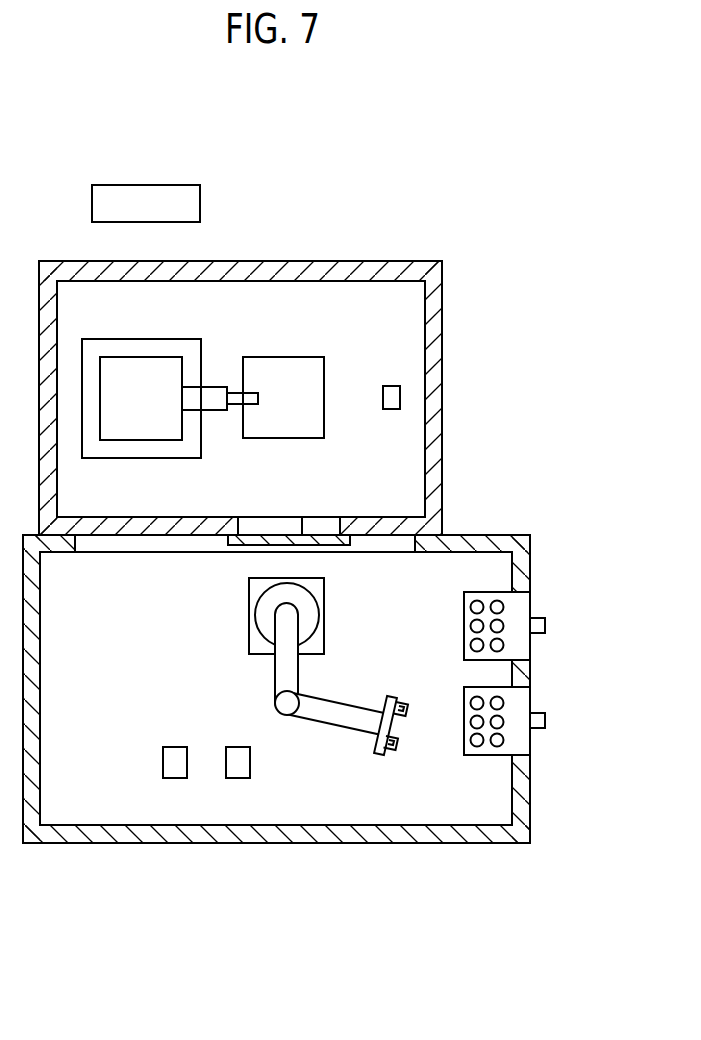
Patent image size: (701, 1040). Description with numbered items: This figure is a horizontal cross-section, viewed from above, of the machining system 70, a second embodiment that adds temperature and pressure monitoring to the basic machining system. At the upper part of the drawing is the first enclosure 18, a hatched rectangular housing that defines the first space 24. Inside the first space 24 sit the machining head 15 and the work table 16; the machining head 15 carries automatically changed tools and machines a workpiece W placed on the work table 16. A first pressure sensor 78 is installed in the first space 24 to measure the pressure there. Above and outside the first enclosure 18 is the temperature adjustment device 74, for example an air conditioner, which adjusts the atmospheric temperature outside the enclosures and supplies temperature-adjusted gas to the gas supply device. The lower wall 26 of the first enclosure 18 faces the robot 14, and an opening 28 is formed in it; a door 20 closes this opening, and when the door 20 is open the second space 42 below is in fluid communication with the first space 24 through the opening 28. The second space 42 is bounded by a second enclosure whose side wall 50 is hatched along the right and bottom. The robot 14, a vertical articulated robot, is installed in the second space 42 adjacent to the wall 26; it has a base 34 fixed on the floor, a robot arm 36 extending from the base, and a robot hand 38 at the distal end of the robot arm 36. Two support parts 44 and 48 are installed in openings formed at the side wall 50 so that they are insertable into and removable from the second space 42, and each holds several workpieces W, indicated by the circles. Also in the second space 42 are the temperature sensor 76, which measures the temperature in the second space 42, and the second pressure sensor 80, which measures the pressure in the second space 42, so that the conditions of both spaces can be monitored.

The machining system 70 is at (552, 125).
The temperature adjustment device 74 is at (140, 212).
The first enclosure 18 is at (432, 302).
The first space 24 is at (108, 318).
The machining head 15 is at (213, 395).
The work table 16 is at (302, 357).
The first pressure sensor 78 is at (393, 394).
The door 20 is at (303, 518).
The wall 26 is at (370, 523).
The opening 28 is at (248, 520).
The side wall 50 is at (520, 800).
The second space 42 is at (102, 790).
The support part 44 is at (567, 635).
The support part 48 is at (567, 715).
The workpiece W is at (497, 601).
The robot 14 is at (300, 750).
The base 34 is at (249, 592).
The robot arm 36 is at (358, 700).
The robot hand 38 is at (411, 688).
The temperature sensor 76 is at (173, 765).
The second pressure sensor 80 is at (237, 765).